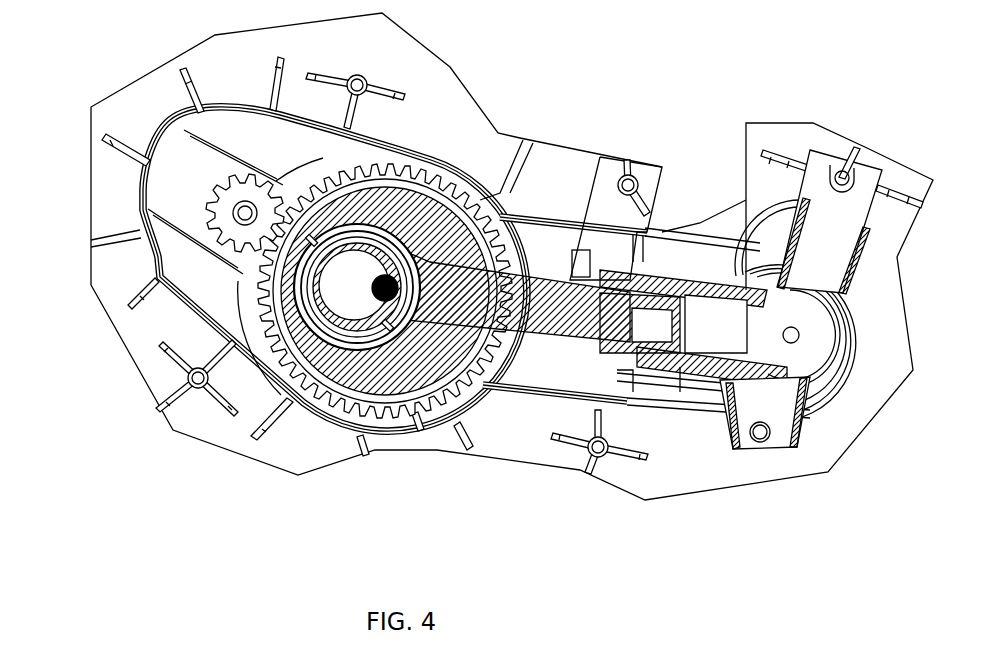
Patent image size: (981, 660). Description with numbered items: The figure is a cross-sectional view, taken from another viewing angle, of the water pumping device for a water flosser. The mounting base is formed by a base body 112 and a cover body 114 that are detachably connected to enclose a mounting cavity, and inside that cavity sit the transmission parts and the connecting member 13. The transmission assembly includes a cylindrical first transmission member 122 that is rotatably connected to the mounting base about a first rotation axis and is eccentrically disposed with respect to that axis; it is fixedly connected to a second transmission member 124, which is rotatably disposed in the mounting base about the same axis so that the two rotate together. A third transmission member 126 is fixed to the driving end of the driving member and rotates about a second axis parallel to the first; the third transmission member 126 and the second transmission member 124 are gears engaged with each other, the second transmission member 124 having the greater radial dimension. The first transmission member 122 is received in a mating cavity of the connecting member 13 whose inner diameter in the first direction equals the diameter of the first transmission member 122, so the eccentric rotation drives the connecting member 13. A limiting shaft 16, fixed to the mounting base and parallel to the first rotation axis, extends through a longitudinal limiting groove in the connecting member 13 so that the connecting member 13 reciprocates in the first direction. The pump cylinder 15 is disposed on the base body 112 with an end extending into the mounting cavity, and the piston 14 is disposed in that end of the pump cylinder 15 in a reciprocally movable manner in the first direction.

The base body 112 is at (118, 305).
The cover body 114 is at (190, 115).
The first transmission member 122 is at (340, 330).
The second transmission member 124 is at (453, 373).
The third transmission member 126 is at (205, 204).
The connecting member 13 is at (540, 280).
The piston 14 is at (637, 350).
The pump cylinder 15 is at (697, 277).
The limiting shaft 16 is at (410, 200).